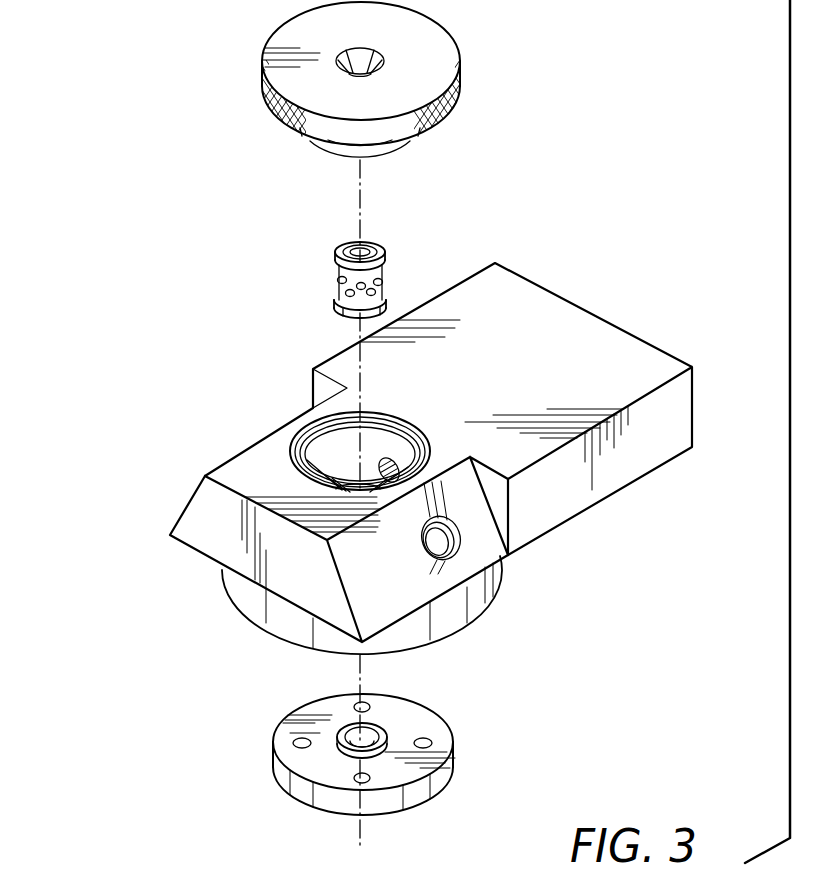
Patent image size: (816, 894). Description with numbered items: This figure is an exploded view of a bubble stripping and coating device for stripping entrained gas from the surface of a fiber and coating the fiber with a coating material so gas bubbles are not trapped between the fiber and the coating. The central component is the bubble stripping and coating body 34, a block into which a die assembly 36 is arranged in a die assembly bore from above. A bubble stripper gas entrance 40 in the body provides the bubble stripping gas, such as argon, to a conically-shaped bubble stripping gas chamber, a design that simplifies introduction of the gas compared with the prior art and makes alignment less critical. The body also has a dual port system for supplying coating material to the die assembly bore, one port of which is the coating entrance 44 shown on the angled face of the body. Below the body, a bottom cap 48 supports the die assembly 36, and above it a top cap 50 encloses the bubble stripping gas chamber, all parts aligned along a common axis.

The top cap 50 is at (263, 82).
The die assembly 36 is at (328, 293).
The bubble stripping and coating body 34 is at (243, 542).
The bubble stripper gas entrance 40 is at (403, 456).
The coating entrance 44 is at (452, 529).
The bottom cap 48 is at (274, 766).